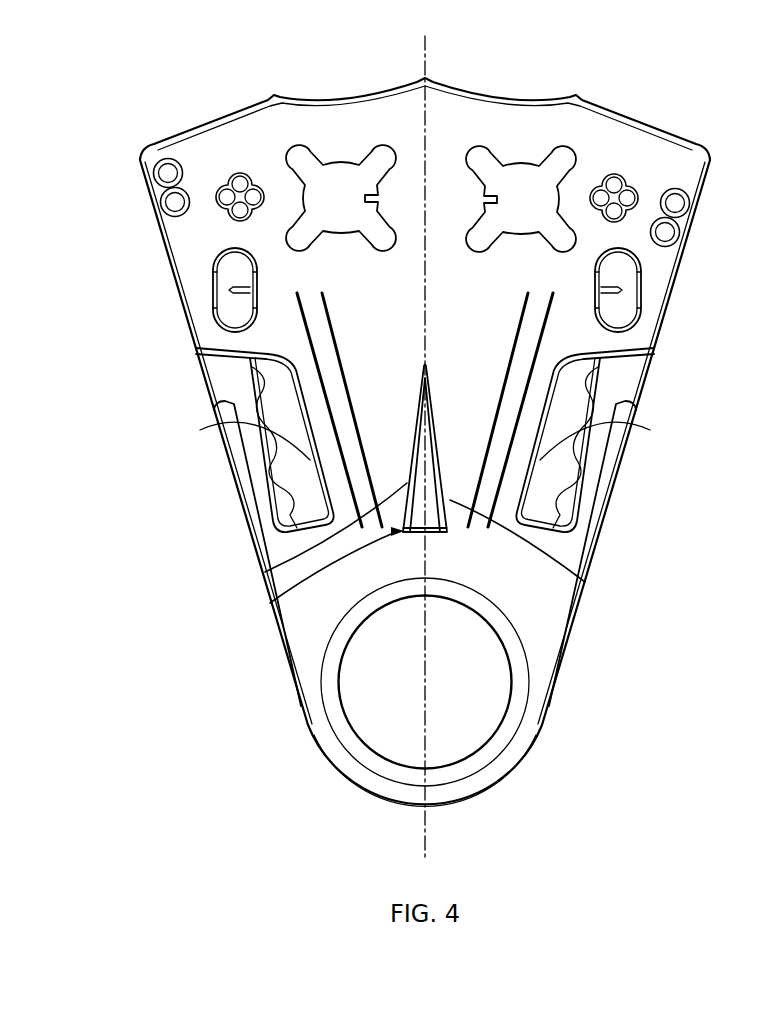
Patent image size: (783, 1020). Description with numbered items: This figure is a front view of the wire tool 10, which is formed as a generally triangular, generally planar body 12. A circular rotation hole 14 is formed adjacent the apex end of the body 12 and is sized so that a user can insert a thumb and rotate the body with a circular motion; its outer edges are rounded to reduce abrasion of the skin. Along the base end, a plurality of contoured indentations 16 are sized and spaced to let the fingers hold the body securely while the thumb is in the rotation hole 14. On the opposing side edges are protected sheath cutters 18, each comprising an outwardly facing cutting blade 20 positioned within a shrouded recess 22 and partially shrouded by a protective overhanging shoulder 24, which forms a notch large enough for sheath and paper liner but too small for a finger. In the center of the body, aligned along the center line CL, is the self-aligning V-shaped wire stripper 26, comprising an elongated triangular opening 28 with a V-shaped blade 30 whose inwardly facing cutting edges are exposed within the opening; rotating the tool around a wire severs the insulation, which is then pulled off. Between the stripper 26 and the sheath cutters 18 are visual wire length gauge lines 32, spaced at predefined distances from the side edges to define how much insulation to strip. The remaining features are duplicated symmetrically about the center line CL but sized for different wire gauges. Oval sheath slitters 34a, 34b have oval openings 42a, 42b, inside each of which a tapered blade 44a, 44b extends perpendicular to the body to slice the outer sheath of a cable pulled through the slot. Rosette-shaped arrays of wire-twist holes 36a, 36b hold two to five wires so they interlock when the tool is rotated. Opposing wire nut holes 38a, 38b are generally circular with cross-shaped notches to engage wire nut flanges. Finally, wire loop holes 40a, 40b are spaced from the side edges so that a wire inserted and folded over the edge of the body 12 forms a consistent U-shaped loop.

The wire tool 10 is at (278, 697).
The body 12 is at (553, 620).
The rotation hole 14 is at (500, 740).
The contoured indentations 16 is at (263, 100).
The protected sheath cutter 18 is at (232, 534).
The cutting blade 20 is at (307, 458).
The shrouded recess 22 is at (305, 462).
The protective overhanging shoulder 24 is at (218, 421).
The V-shaped wire stripper 26 is at (270, 603).
The triangular opening 28 is at (583, 581).
The V-shaped blade 30 is at (270, 569).
The visual wire length gauge lines 32 is at (252, 367).
The oval sheath slitter 34a is at (195, 300).
The oval sheath slitter 34b is at (660, 305).
The rosette-shaped array of wire-twist holes 36a is at (240, 155).
The rosette-shaped array of wire-twist holes 36b is at (617, 150).
The wire nut hole 38a is at (338, 138).
The wire nut hole 38b is at (538, 134).
The through hole 40a is at (162, 206).
The wire loop hole 40b is at (156, 170).
The oval opening 42a is at (213, 293).
The oval opening 42b is at (643, 272).
The tapered blade 44a is at (250, 291).
The tapered blade 44b is at (600, 291).
The center line CL is at (430, 60).